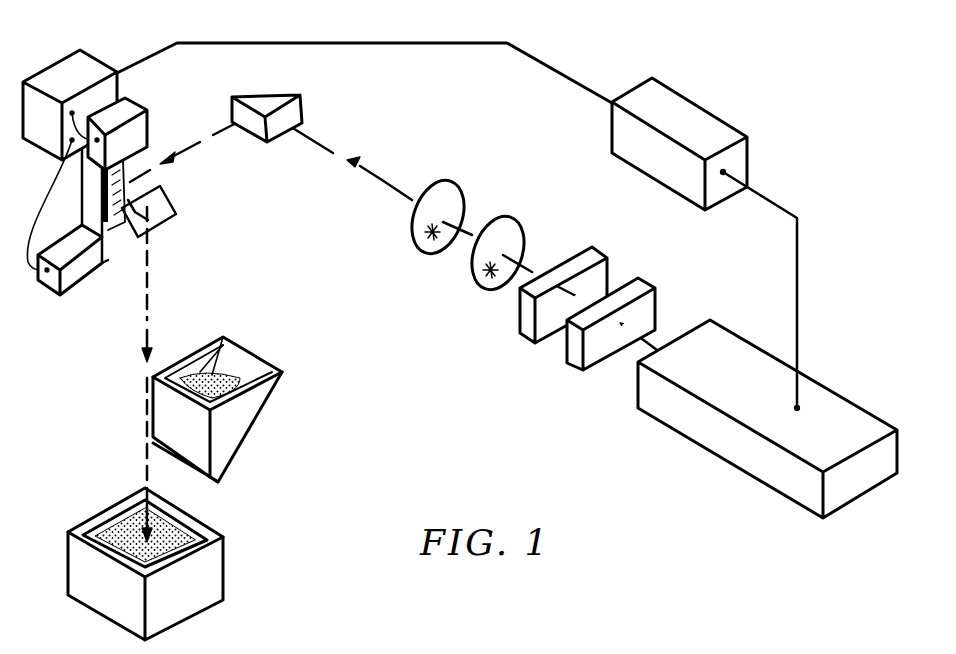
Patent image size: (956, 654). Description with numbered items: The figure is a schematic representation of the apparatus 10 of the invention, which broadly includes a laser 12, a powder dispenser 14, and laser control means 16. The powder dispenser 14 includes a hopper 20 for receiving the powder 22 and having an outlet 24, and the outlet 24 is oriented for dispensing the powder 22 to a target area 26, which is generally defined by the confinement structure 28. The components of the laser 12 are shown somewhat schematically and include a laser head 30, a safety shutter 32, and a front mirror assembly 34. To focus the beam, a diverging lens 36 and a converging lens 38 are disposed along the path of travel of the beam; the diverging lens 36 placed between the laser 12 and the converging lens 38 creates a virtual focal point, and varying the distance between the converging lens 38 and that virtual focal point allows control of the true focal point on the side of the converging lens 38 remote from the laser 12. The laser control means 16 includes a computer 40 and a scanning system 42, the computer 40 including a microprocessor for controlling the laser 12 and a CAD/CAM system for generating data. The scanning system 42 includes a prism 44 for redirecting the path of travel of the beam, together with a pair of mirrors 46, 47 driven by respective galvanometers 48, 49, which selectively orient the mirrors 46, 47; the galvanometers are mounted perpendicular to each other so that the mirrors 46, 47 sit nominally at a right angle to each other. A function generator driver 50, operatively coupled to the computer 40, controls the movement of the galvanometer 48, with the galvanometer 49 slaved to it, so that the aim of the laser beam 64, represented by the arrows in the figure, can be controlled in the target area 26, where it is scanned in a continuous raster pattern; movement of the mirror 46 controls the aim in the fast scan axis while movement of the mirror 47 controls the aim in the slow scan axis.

The apparatus 10 is at (661, 482).
The laser 12 is at (580, 399).
The powder dispenser 14 is at (303, 368).
The laser control means 16 is at (628, 63).
The hopper 20 is at (266, 408).
The powder 22 is at (228, 380).
The outlet 24 is at (208, 480).
The target area 26 is at (118, 537).
The confinement structure 28 is at (183, 600).
The laser head 30 is at (673, 427).
The safety shutter 32 is at (567, 350).
The front mirror assembly 34 is at (520, 317).
The diverging lens 36 is at (470, 283).
The converging lens 38 is at (412, 242).
The computer 40 is at (710, 107).
The scanning system 42 is at (86, 36).
The prism 44 is at (300, 106).
The mirror 46 is at (130, 178).
The mirror 47 is at (172, 204).
The galvanometer 48 is at (133, 101).
The galvanometer 49 is at (85, 288).
The function generator driver 50 is at (56, 72).
The laser beam 64 is at (147, 465).